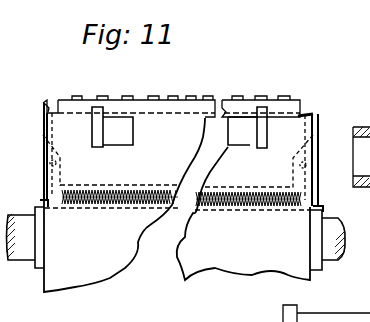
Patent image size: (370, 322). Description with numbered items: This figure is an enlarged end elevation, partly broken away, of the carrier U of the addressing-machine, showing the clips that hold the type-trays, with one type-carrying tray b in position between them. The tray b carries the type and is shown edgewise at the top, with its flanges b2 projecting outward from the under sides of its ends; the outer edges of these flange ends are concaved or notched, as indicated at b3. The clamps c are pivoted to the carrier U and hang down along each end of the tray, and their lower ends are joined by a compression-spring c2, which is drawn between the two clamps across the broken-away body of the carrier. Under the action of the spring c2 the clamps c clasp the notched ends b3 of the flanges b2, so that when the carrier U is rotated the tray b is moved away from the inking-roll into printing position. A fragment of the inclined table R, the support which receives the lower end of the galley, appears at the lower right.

The type-carrying tray b is at (178, 108).
The flange b2 is at (50, 110).
The notched end of flange b3 is at (48, 110).
The clamp c is at (43, 115).
The compression-spring c2 is at (100, 203).
The carrier U is at (183, 276).
The inclined table R is at (348, 320).